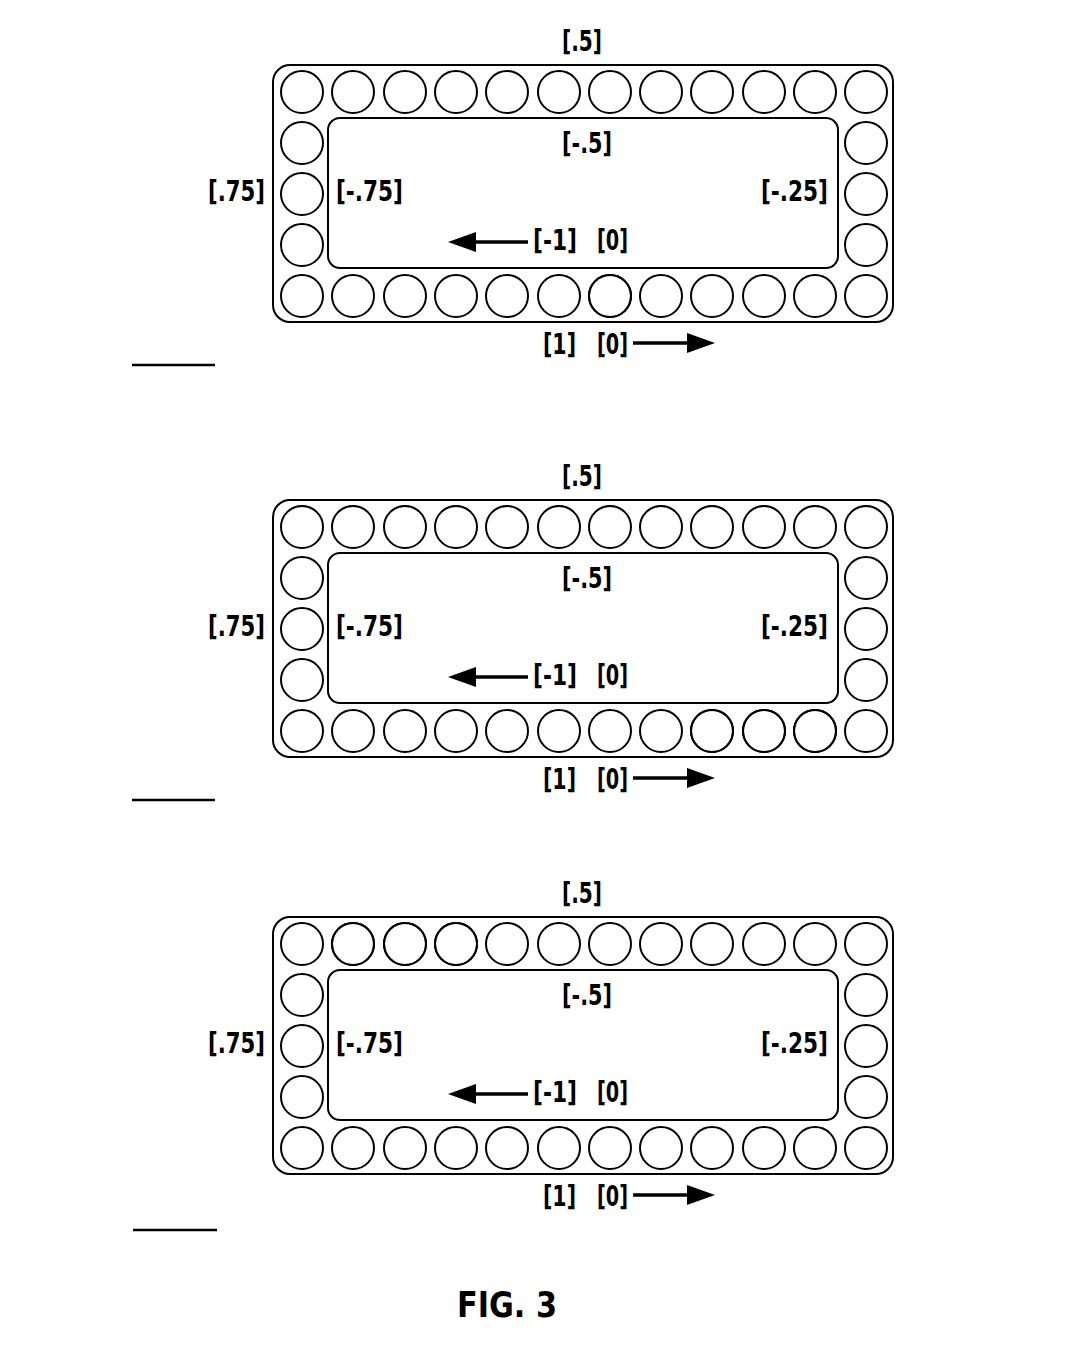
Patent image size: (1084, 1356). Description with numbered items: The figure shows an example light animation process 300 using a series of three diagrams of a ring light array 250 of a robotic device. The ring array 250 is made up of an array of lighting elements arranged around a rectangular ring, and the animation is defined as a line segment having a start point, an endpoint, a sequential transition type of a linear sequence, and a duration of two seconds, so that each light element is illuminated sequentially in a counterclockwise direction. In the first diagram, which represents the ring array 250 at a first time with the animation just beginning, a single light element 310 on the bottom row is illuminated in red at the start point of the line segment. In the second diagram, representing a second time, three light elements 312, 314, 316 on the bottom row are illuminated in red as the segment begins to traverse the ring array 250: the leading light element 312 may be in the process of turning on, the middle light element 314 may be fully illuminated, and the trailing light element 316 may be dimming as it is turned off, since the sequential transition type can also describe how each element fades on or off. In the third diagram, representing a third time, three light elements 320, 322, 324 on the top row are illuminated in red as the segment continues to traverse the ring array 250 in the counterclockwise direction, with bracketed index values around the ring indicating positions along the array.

The light animation process 300 is at (94, 49).
The ring light array 250 is at (299, 36).
The light element 310 is at (626, 282).
The leading light element 312 is at (823, 744).
The middle light element 314 is at (768, 750).
The trailing light element 316 is at (714, 750).
The light element 320 is at (357, 924).
The light element 322 is at (418, 924).
The light element 324 is at (461, 924).